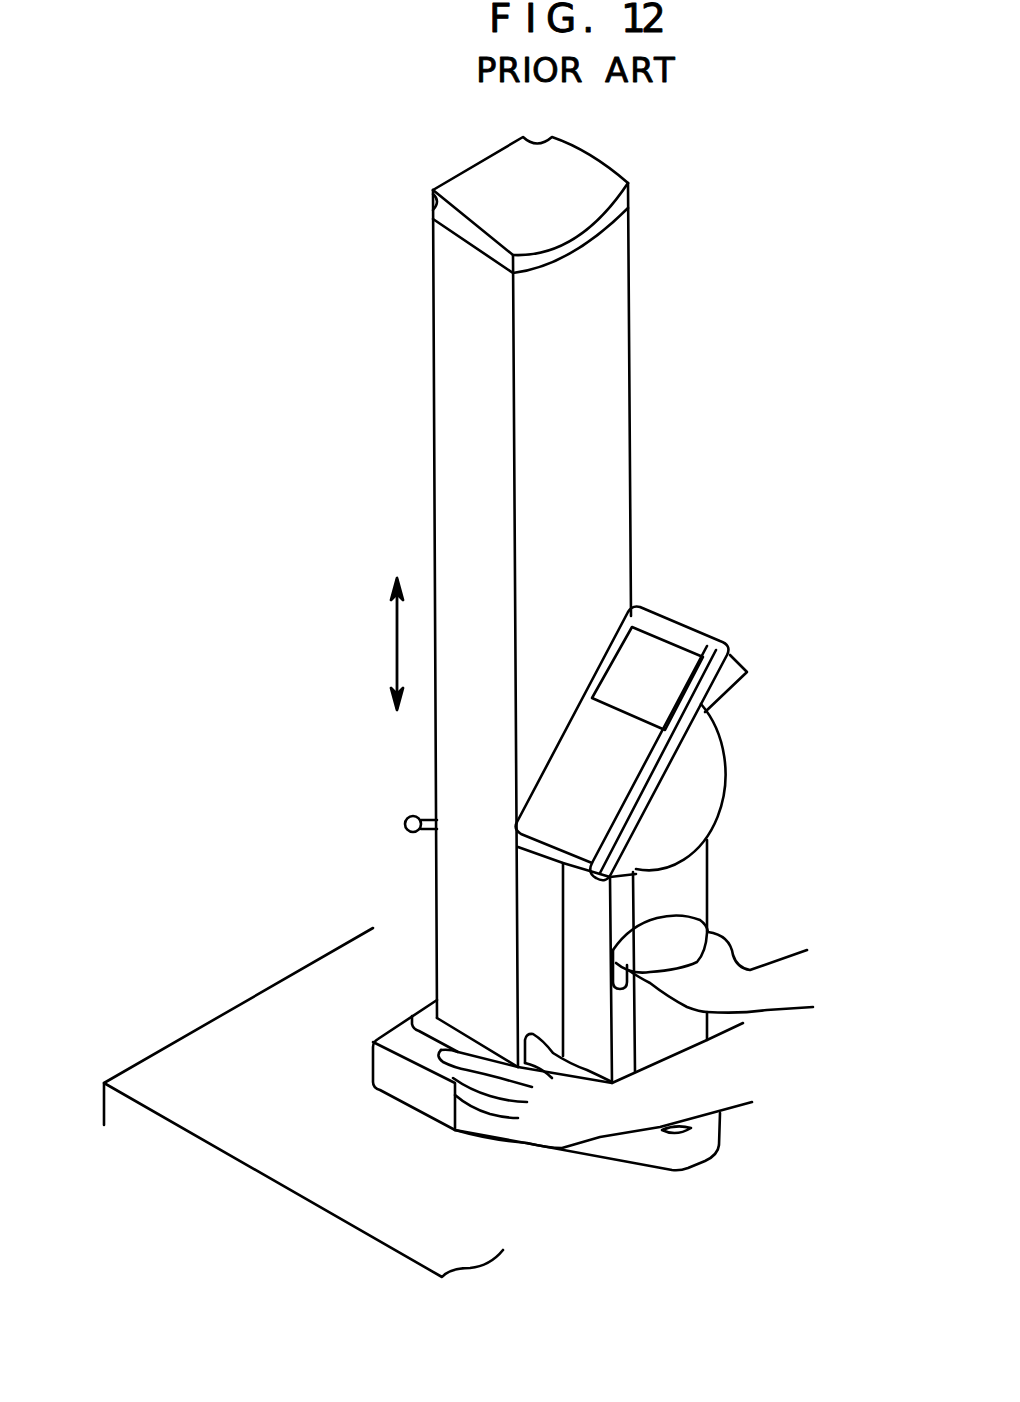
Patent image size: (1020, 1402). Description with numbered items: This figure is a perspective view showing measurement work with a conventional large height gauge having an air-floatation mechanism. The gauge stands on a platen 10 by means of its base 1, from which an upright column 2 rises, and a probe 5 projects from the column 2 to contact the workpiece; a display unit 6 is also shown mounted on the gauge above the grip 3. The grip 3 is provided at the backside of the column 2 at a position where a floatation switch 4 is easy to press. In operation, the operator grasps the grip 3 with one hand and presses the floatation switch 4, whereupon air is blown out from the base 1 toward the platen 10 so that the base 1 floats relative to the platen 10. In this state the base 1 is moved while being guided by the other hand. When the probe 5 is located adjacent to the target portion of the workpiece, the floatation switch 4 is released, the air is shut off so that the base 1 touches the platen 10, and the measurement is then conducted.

The base 1 is at (388, 1090).
The column 2 is at (623, 448).
The grip 3 is at (697, 880).
The floatation switch 4 is at (707, 922).
The probe 5 is at (408, 820).
The display unit 6 is at (700, 627).
The platen 10 is at (378, 1230).